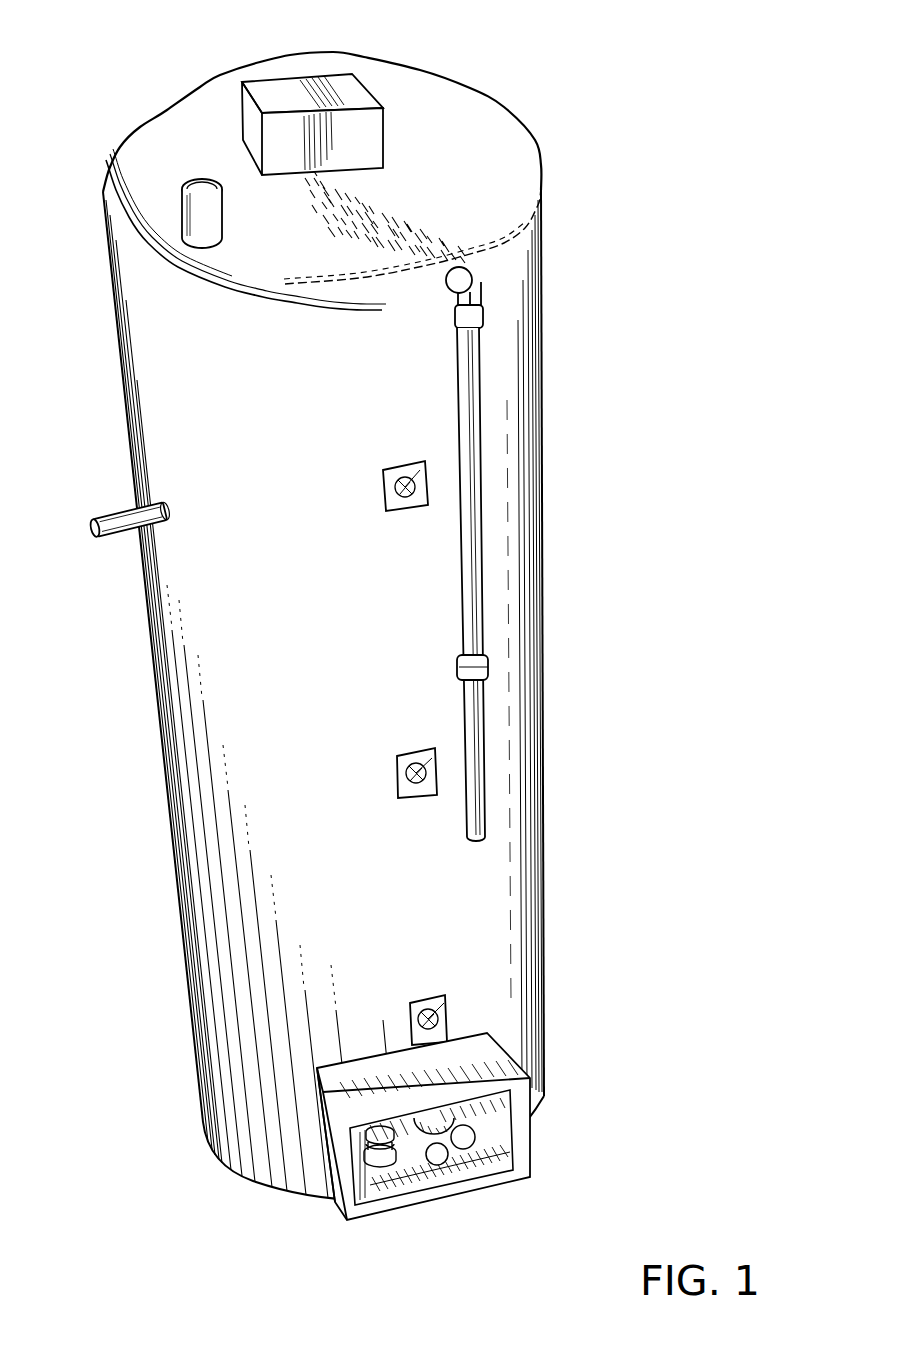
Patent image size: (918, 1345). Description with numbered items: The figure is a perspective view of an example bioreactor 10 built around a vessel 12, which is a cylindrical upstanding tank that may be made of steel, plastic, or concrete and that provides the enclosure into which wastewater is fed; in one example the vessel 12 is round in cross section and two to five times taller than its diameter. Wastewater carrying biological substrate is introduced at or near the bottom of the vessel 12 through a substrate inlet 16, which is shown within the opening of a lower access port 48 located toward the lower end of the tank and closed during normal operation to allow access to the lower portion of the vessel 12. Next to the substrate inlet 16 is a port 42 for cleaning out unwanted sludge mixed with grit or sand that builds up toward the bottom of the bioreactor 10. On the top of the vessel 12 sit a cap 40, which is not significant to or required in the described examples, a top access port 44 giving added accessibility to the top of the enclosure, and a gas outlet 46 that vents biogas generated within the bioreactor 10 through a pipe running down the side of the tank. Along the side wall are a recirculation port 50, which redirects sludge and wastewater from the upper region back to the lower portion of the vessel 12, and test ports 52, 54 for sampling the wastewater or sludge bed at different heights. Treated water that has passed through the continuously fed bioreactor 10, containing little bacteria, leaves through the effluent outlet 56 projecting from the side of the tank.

The bioreactor 10 is at (516, 68).
The vessel 12 is at (236, 422).
The substrate inlet 16 is at (468, 1148).
The cap 40 is at (303, 145).
The port 42 is at (437, 1165).
The top access port 44 is at (204, 214).
The gas outlet 46 is at (474, 273).
The lower access port 48 is at (443, 1118).
The recirculation port 50 is at (400, 510).
The test port 52 is at (405, 775).
The test port 54 is at (413, 1003).
The effluent outlet 56 is at (114, 514).